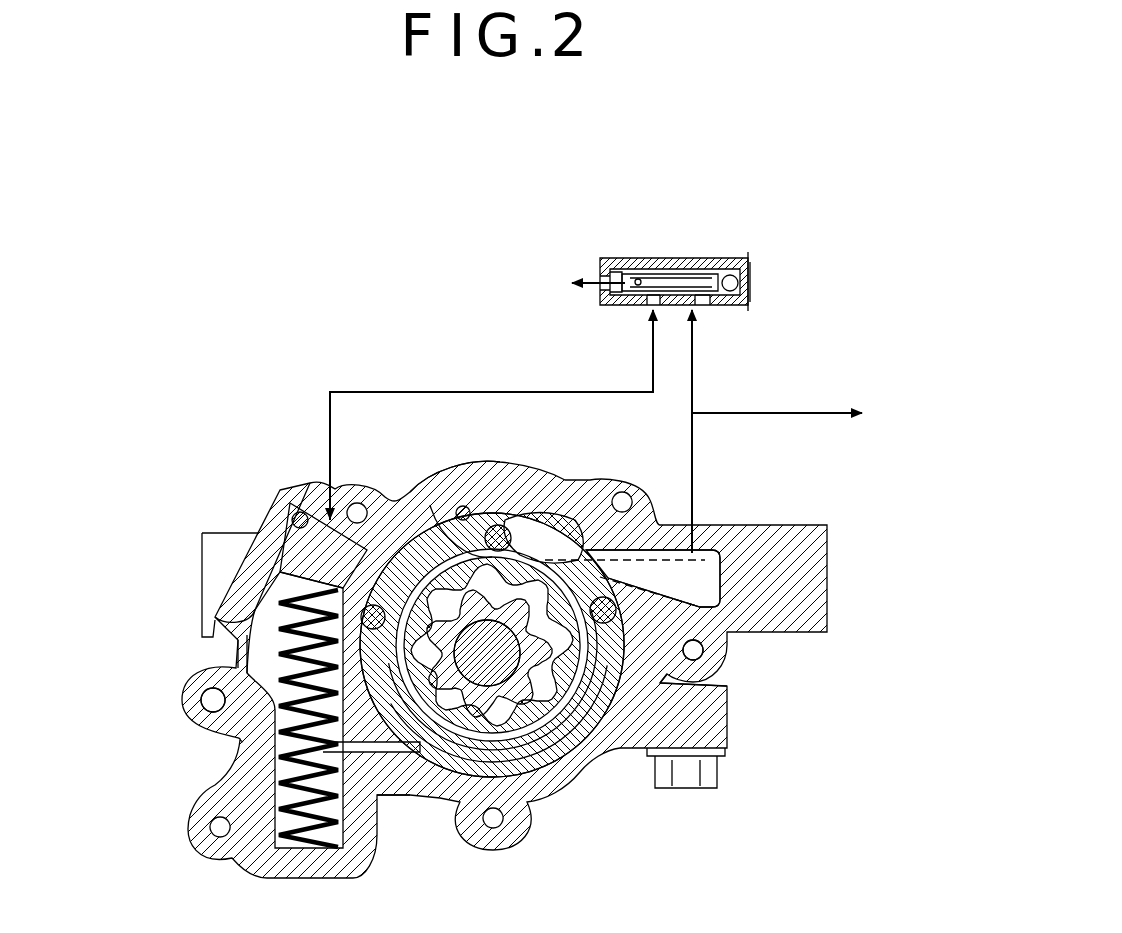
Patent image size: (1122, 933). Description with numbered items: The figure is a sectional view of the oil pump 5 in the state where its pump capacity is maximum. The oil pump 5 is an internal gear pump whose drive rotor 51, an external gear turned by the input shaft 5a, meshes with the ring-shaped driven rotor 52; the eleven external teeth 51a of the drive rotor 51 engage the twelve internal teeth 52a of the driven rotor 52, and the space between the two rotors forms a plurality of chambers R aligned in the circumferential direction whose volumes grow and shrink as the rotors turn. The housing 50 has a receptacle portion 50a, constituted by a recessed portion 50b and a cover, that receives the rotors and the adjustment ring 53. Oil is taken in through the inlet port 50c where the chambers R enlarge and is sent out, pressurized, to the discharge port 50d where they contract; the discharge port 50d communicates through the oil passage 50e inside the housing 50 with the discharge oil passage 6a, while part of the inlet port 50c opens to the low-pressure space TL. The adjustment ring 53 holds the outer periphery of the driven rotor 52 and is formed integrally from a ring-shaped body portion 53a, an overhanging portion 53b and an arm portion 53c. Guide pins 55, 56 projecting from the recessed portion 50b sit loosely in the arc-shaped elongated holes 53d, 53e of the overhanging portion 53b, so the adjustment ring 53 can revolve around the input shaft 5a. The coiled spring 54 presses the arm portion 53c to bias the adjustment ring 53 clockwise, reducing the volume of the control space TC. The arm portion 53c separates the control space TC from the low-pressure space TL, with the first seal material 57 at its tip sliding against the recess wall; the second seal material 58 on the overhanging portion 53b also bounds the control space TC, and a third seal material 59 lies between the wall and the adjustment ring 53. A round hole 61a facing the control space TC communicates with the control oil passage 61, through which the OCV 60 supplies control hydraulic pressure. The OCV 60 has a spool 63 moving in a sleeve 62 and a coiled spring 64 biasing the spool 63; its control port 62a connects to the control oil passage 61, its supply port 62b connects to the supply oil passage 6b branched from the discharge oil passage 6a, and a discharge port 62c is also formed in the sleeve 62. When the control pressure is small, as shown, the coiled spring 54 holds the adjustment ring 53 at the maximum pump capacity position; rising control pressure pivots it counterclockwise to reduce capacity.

The oil pump 5 is at (242, 420).
The input shaft 5a is at (487, 653).
The discharge oil passage 6a is at (720, 413).
The supply oil passage 6b is at (694, 378).
The housing 50 is at (258, 500).
The receptacle portion 50a is at (273, 710).
The recessed portion 50b is at (252, 606).
The inlet port 50c is at (273, 755).
The discharge port 50d is at (690, 705).
The oil passage 50e is at (745, 528).
The drive rotor 51 is at (458, 790).
The external teeth 51a is at (455, 780).
The driven rotor 52 is at (535, 770).
The internal teeth 52a is at (582, 748).
The adjustment ring 53 is at (720, 758).
The body portion 53a is at (598, 742).
The overhanging portion 53b is at (428, 515).
The arm portion 53c is at (360, 612).
The arc-shaped elongated hole 53d is at (372, 505).
The arc-shaped elongated hole 53e is at (545, 535).
The coiled spring 54 is at (255, 690).
The guide pin 55 is at (300, 633).
The guide pin 56 is at (478, 560).
The first seal material 57 is at (283, 500).
The second seal material 58 is at (465, 506).
The third seal material 59 is at (705, 650).
The OCV 60 is at (738, 256).
The control oil passage 61 is at (398, 392).
The round hole 61a is at (310, 512).
The sleeve 62 is at (640, 270).
The control port 62a is at (645, 306).
The supply port 62b is at (703, 306).
The discharge port 62c is at (600, 276).
The spool 63 is at (692, 270).
The coiled spring 64 is at (618, 268).
The chambers R is at (592, 722).
The control space TC is at (432, 505).
The low-pressure space TL is at (391, 862).